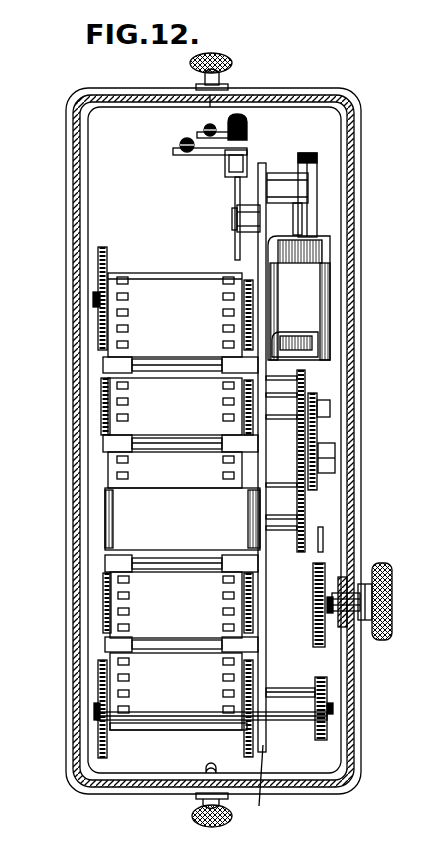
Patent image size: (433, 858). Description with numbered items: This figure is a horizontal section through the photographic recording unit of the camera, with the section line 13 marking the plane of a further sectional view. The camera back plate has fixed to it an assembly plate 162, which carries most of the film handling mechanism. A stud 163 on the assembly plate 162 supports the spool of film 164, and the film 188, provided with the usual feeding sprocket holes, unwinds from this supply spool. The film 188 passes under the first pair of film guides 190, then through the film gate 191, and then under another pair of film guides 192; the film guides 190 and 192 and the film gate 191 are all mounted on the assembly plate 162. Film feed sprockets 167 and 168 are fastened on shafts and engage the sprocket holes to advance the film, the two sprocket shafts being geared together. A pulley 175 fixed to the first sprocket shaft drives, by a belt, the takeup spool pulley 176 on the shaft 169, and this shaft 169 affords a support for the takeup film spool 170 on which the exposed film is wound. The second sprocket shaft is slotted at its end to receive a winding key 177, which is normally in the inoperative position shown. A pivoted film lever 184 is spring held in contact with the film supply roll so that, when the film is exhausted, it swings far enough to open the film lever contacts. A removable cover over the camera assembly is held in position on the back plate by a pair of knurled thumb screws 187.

The section line 13- 13 is at (366, 66).
The assembly plate 162 is at (266, 786).
The stud 163 is at (96, 300).
The spool of film 164 is at (105, 257).
The film feed sprocket 167 is at (104, 408).
The film feed sprocket 168 is at (106, 603).
The shaft 169 is at (333, 710).
The takeup film spool 170 is at (100, 748).
The pulley 175 is at (327, 642).
The takeup spool pulley 176 is at (327, 683).
The winding key 177 is at (360, 588).
The film lever 184 is at (235, 190).
The knurled thumb screw 187 is at (229, 62).
The film 188 is at (176, 278).
The film guides 190 is at (185, 368).
The film gate 191 is at (182, 519).
The film guides 192 is at (180, 566).